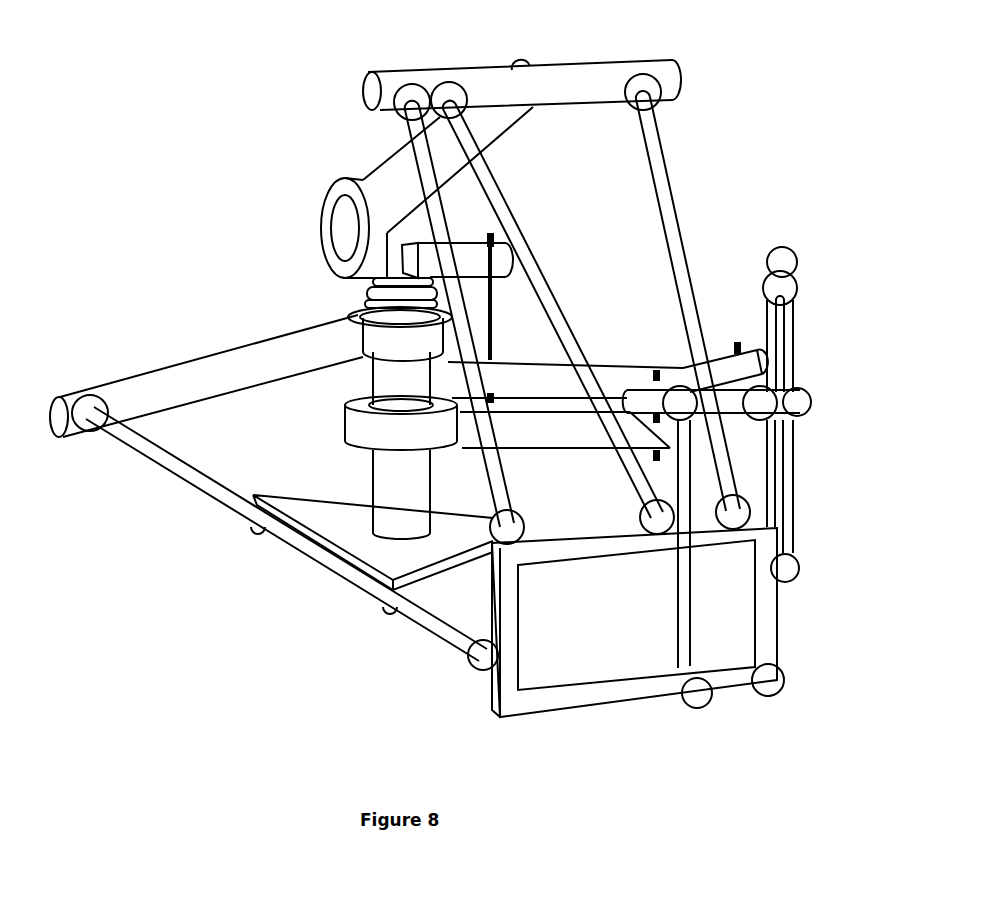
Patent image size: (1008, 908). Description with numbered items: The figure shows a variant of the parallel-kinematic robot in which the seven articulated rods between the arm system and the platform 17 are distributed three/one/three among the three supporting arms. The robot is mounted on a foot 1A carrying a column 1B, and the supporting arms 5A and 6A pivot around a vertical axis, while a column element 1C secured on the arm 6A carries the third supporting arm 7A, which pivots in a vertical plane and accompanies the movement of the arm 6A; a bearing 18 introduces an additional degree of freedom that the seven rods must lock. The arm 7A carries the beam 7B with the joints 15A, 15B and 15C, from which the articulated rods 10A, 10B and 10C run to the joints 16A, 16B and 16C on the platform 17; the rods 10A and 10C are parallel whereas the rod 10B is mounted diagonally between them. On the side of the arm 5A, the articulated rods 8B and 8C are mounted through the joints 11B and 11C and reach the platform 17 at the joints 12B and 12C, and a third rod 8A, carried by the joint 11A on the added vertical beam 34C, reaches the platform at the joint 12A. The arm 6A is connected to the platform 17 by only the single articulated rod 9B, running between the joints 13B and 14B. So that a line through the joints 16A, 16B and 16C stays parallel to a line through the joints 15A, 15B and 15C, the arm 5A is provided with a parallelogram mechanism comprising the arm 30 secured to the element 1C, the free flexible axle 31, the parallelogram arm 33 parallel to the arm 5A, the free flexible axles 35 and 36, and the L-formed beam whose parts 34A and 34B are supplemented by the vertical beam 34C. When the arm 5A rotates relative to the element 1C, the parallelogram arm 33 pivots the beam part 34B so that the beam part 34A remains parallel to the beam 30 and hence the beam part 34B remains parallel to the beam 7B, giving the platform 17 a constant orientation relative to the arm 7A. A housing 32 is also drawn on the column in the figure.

The beam 7B is at (563, 80).
The joint 15A is at (403, 95).
The joint 15B is at (447, 92).
The joint 15C is at (648, 85).
The articulated rod 10A is at (413, 137).
The articulated rod 10B is at (477, 163).
The articulated rod 10C is at (645, 123).
The joint 16A is at (503, 525).
The joint 16B is at (650, 517).
The joint 16C is at (738, 513).
The platform 17 is at (607, 707).
The articulated rod 8C is at (683, 598).
The articulated rod 8A is at (782, 390).
The articulated rod 8B is at (760, 493).
The vertical beam 34C is at (783, 257).
The joint 11A is at (783, 290).
The joint 11B is at (760, 420).
The joint 11C is at (680, 407).
The joint 12A is at (788, 582).
The joint 12B is at (777, 702).
The joint 12C is at (697, 697).
The parallelogram arm 33 is at (600, 373).
The first supporting arm 5A is at (570, 427).
The beam part 34A is at (747, 360).
The beam part 34B is at (727, 405).
The free flexible axle 35 is at (737, 347).
The free flexible axle 36 is at (657, 373).
The third supporting arm 7A is at (400, 173).
The element 1C is at (408, 230).
The arm 30 is at (425, 260).
The free flexible axle 31 is at (493, 300).
The bearing 18 is at (367, 297).
The column 1B is at (383, 377).
The bearing housing 32 is at (413, 380).
The second supporting arm 6A is at (233, 363).
The joint 13B is at (83, 423).
The articulated rod 9B is at (220, 495).
The joint 14B is at (483, 660).
The foot 1A is at (370, 562).